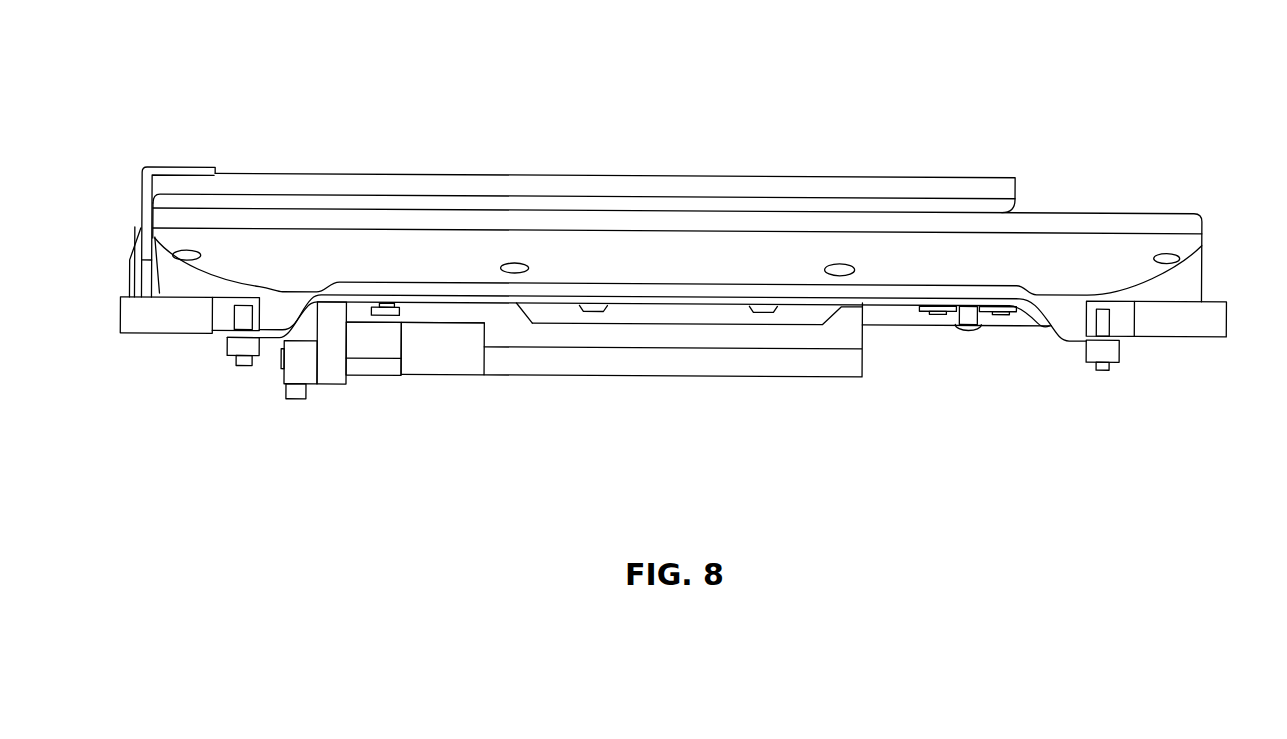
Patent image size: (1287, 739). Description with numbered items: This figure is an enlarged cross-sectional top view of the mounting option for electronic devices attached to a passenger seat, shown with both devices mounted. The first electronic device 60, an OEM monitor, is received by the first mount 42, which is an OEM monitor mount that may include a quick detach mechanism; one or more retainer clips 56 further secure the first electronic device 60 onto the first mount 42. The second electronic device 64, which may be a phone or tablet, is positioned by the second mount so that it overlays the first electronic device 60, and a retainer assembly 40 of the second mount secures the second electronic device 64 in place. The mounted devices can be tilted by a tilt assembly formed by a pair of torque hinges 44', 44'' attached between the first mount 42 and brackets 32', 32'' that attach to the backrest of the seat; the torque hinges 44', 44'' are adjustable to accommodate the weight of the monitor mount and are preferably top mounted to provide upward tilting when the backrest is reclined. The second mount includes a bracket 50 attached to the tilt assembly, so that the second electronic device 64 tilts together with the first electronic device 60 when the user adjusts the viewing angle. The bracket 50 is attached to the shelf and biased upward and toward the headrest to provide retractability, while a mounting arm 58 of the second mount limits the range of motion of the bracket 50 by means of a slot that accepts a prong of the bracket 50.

The retainer assembly 40 is at (188, 167).
The second electronic device 64 is at (878, 173).
The first electronic device 60 is at (1103, 228).
The bracket 32' is at (175, 368).
The torque hinge 44' is at (218, 379).
The first mount 42 is at (898, 299).
The bracket 50 is at (390, 368).
The mounting arm 58 is at (305, 373).
The retainer clip 56 is at (1015, 307).
The torque hinge 44'' is at (1133, 367).
The bracket 32'' is at (1169, 365).